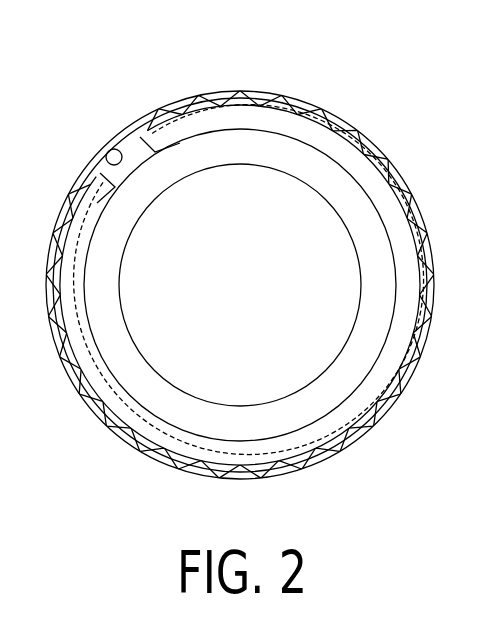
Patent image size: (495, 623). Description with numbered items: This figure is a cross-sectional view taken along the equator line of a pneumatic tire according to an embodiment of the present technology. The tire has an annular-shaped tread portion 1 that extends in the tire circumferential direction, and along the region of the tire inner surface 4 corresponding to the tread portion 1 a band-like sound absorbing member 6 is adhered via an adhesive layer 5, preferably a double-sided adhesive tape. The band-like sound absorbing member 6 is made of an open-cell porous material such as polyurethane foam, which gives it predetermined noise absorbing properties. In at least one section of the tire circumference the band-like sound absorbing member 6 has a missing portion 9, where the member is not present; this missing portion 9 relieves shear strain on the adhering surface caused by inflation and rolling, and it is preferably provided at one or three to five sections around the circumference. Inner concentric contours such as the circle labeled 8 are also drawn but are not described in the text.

The tread portion 1 is at (287, 102).
The tire inner surface 4 is at (118, 151).
The adhesive layer 5 is at (196, 96).
The band-like sound absorbing member 6 is at (243, 115).
The inner cylindrical member 8 is at (326, 172).
The missing portion 9 is at (138, 162).